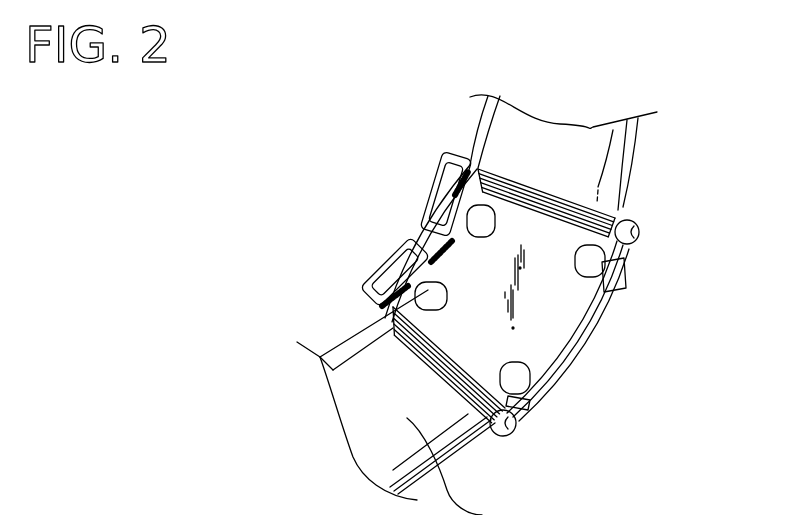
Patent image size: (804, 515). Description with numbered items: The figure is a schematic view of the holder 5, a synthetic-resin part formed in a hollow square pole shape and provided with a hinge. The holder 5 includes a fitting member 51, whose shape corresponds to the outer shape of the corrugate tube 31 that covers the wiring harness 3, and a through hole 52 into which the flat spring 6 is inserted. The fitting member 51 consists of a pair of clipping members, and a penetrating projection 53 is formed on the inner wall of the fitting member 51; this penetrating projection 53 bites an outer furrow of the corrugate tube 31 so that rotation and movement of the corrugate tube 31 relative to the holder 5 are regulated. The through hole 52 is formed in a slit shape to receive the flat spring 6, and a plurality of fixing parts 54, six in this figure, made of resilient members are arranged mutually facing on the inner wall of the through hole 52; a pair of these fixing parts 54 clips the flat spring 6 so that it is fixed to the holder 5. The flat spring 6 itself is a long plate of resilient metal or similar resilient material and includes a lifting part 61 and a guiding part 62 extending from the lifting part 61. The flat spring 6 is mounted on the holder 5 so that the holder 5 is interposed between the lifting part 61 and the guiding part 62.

The wiring harness 3 is at (590, 152).
The corrugate tube 31 is at (470, 445).
The holder 5 is at (528, 297).
The fitting member 51 is at (515, 398).
The through hole 52 is at (370, 313).
The penetrating projection 53 is at (634, 222).
The fixing part 54 is at (420, 237).
The flat spring 6 is at (327, 341).
The lifting part 61 is at (480, 130).
The guiding part 62 is at (353, 327).